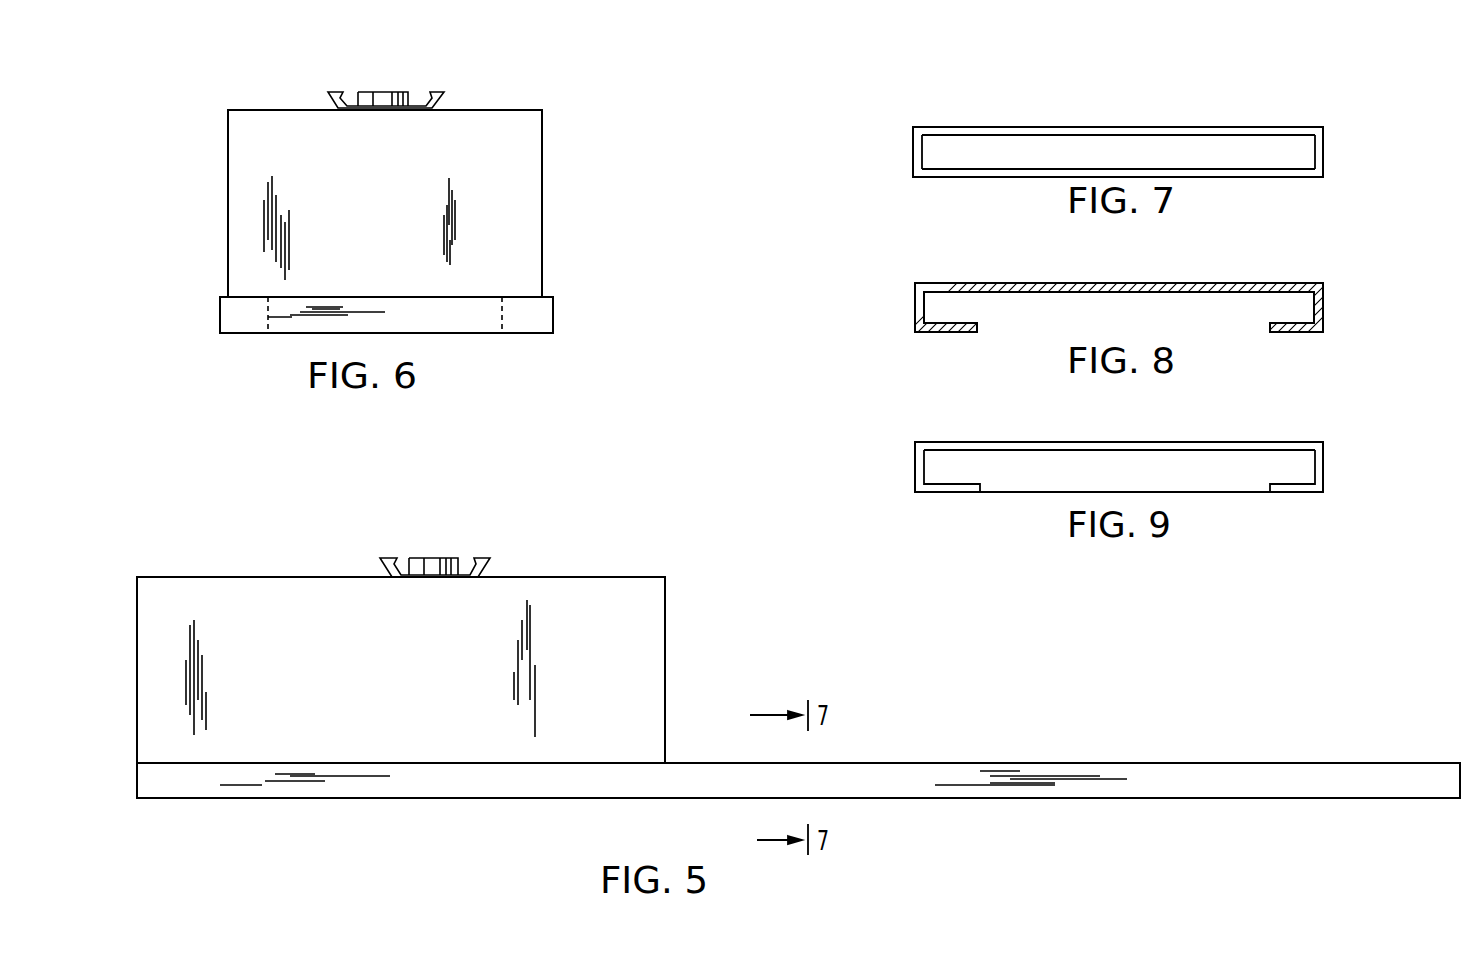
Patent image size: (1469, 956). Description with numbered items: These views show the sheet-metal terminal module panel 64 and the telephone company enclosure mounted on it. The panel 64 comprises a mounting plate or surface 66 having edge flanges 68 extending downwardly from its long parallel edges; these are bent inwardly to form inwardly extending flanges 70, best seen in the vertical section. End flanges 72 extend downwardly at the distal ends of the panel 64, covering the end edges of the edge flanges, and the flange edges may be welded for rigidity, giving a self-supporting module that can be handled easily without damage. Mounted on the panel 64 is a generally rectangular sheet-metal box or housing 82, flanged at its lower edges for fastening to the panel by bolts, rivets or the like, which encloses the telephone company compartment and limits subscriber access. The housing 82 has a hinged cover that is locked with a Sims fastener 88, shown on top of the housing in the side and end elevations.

In FIG. 7, the terminal module panel 64 is at (1252, 116).
In FIG. 8, the terminal module panel 64 is at (1266, 282).
In FIG. 9, the terminal module panel 64 is at (1292, 436).
In FIG. 7, the mounting plate 66 is at (1080, 127).
In FIG. 7, the edge flanges 68 is at (913, 152).
In FIG. 8, the inwardly extending flanges 70 is at (948, 332).
In FIG. 7, the end flanges 72 is at (980, 170).
In FIG. 9, the end flanges 72 is at (1250, 467).
In FIG. 6, the housing 82 is at (542, 203).
In FIG. 5, the housing 82 is at (665, 637).
In FIG. 6, the Sims fastener 88 is at (388, 95).